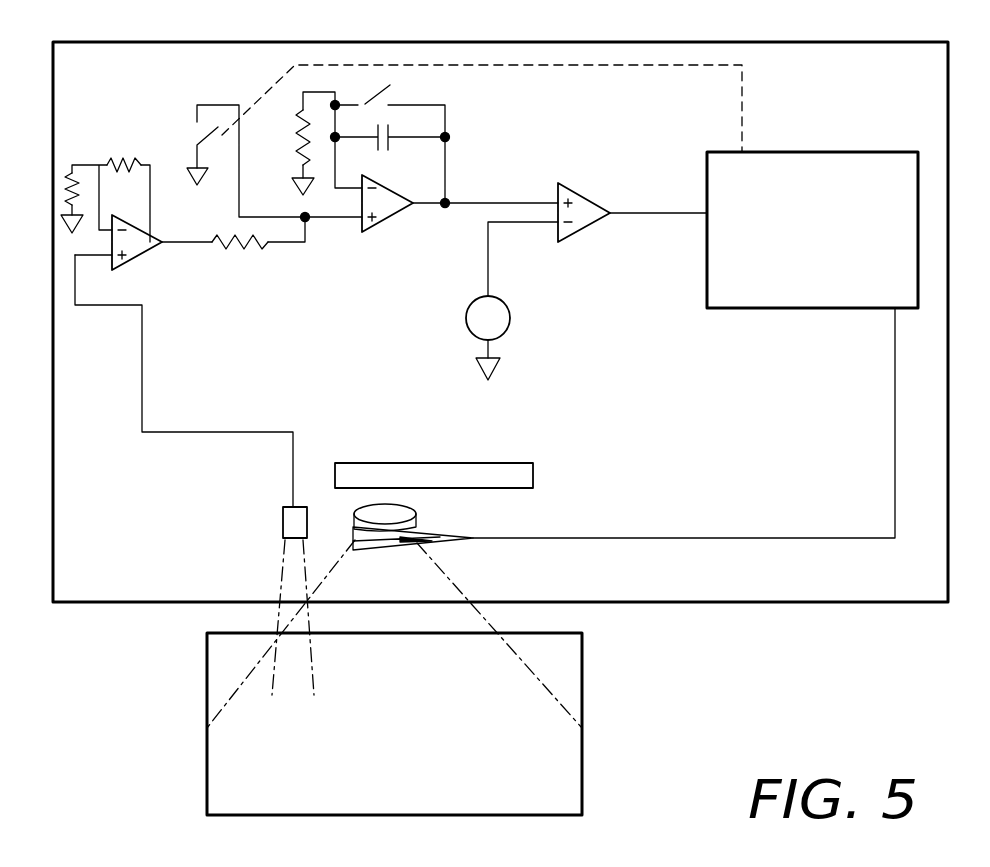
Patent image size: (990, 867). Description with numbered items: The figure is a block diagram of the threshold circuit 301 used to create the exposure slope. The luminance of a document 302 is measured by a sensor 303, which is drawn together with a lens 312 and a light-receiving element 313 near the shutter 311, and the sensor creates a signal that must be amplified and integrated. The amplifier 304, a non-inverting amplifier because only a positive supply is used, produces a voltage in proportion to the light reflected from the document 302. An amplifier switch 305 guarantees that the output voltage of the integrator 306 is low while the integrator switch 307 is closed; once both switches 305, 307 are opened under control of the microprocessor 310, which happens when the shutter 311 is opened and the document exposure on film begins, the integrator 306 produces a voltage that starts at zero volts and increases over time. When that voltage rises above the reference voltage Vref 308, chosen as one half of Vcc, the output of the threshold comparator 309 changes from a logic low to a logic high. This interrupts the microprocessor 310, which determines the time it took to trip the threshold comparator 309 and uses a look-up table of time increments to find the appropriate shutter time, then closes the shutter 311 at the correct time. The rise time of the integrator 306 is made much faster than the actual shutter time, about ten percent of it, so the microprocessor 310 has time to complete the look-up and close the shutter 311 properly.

The optical measurement system 301 is at (614, 26).
The document 302 is at (574, 778).
The sensor 303 is at (282, 520).
The amplifier 304 is at (128, 268).
The amplifier switch 305 is at (197, 139).
The integrator 306 is at (360, 229).
The integrator switch 307 is at (382, 97).
The reference voltage Vref 308 is at (507, 331).
The threshold comparator 309 is at (583, 231).
The microprocessor 310 is at (853, 124).
The shutter 311 is at (455, 545).
The lens 312 is at (416, 512).
The photodetector 313 is at (537, 468).